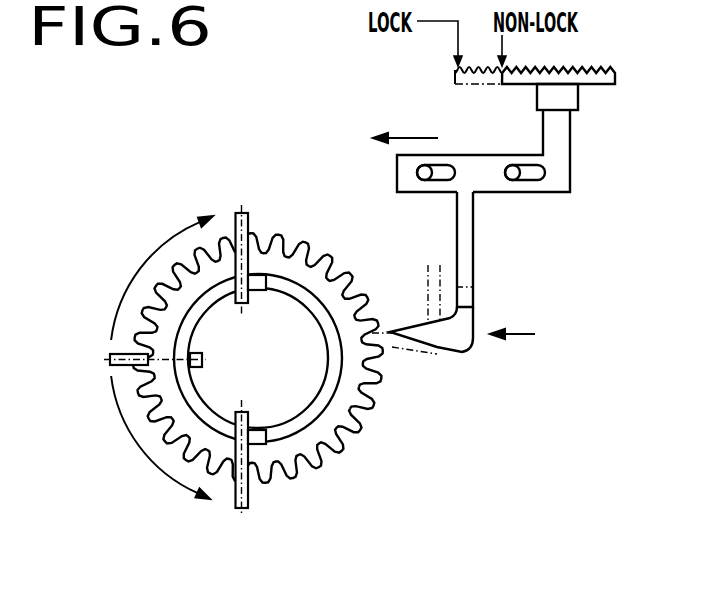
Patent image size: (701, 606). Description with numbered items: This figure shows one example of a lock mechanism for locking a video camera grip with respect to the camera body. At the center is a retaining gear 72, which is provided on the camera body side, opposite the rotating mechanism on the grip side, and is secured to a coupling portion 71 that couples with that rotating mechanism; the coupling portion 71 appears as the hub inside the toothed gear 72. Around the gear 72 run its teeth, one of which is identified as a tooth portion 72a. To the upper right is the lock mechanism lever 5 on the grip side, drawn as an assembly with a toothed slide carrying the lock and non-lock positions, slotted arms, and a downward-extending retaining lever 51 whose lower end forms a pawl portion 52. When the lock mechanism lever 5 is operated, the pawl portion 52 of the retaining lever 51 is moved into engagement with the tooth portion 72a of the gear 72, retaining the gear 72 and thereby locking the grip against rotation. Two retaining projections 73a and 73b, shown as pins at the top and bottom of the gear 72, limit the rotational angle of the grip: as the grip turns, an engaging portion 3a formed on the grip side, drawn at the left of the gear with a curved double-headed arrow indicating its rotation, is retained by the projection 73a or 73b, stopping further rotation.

The engaging portion 3a is at (112, 364).
The lock mechanism lever 5 is at (646, 153).
The retaining lever 51 is at (490, 194).
The pawl portion 52 is at (438, 349).
The coupling portion 71 is at (270, 377).
The retaining gear 72 is at (330, 424).
The tooth portion 72a is at (370, 410).
The retaining projection 73a is at (256, 274).
The retaining projection 73b is at (256, 446).